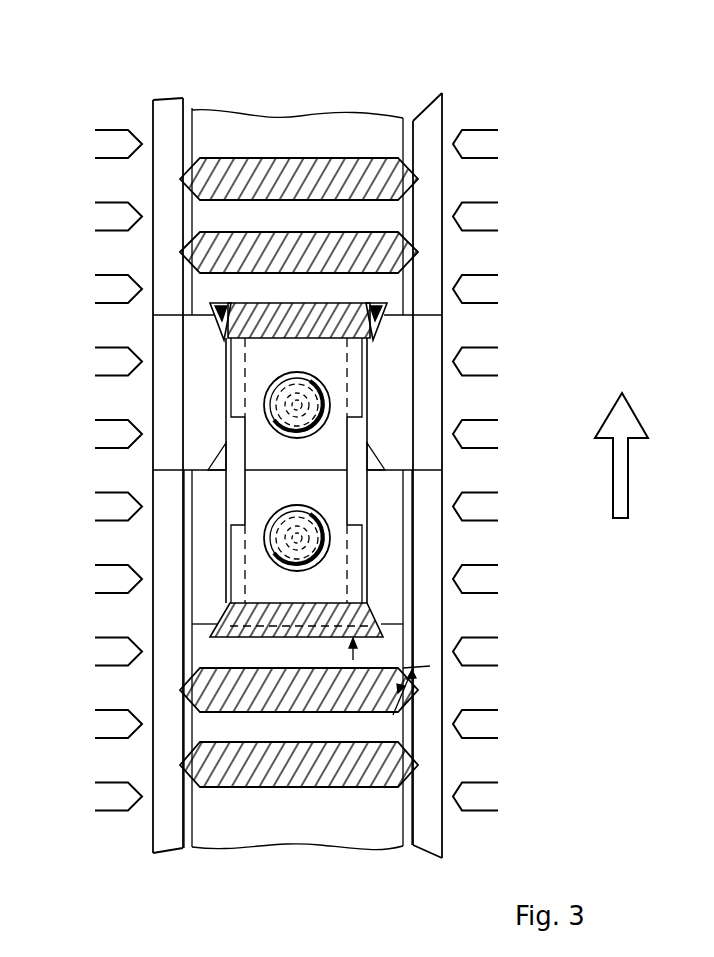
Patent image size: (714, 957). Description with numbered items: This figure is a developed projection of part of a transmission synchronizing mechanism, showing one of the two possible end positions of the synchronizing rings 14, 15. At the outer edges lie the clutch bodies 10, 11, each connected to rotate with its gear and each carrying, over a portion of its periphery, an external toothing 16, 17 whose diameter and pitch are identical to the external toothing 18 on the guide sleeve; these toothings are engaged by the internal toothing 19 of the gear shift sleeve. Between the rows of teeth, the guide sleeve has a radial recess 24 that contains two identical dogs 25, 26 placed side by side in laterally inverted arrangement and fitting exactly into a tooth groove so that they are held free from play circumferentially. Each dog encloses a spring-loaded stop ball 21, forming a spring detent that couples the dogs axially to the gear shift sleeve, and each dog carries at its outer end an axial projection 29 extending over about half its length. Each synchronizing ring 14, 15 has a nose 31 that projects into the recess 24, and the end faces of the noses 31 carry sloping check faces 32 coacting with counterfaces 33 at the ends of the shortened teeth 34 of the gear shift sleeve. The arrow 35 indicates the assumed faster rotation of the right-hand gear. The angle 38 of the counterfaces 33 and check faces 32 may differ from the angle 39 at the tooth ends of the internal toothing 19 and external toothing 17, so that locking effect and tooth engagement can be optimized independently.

The clutch body 10 is at (108, 678).
The clutch body 11 is at (483, 606).
The synchronizing ring 14 is at (163, 188).
The synchronizing ring 15 is at (428, 542).
The external toothing 16 is at (110, 143).
The external toothing 17 is at (487, 141).
The external toothing 18 is at (392, 215).
The internal toothing 19 is at (362, 172).
The stop ball 21 is at (262, 549).
The radial recess 24 is at (232, 487).
The dog 25 is at (260, 378).
The dog 26 is at (260, 580).
The projection 29 is at (237, 378).
The nose 31 is at (172, 447).
The check face 32 is at (378, 337).
The counterface 33 is at (212, 300).
The tooth 34 is at (215, 638).
The arrow 35 is at (623, 500).
The angle 38 is at (380, 609).
The angle 39 is at (416, 680).